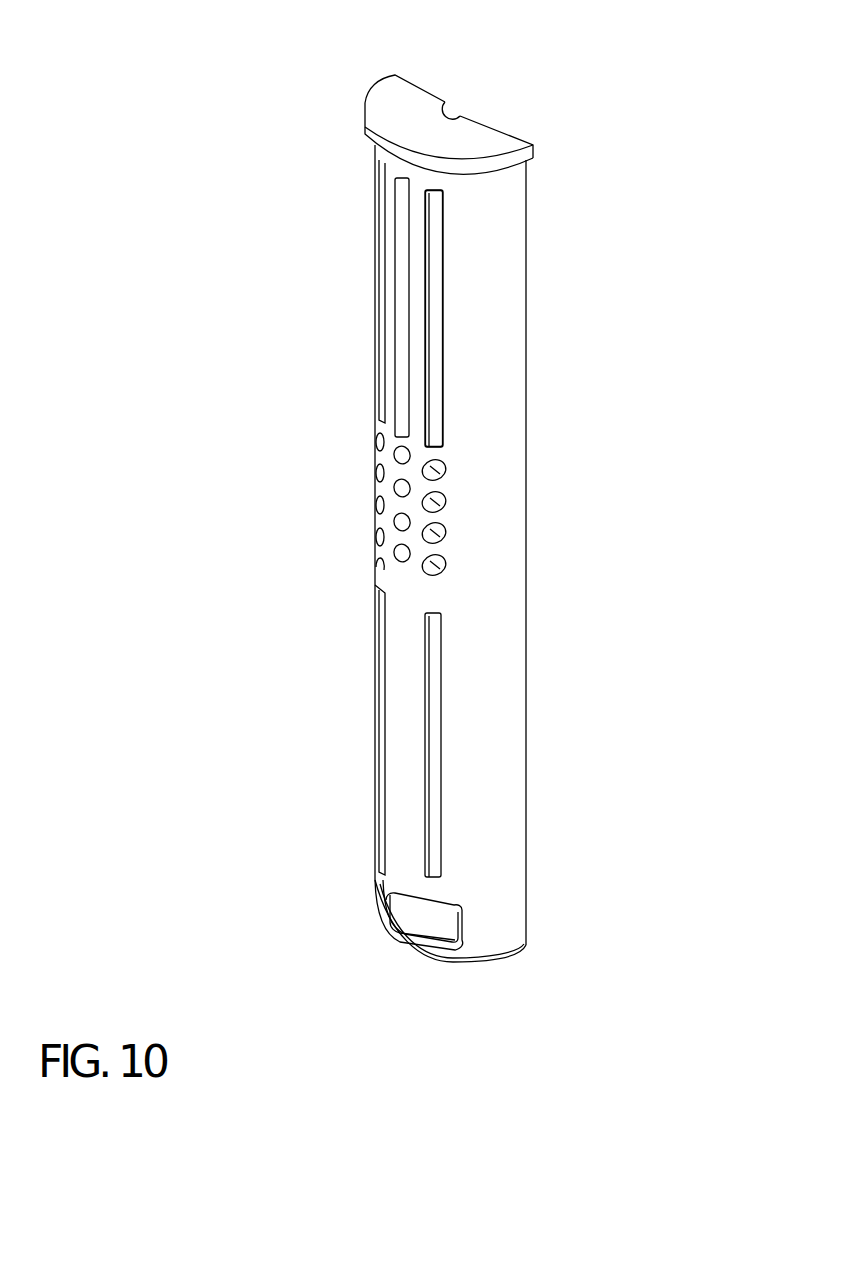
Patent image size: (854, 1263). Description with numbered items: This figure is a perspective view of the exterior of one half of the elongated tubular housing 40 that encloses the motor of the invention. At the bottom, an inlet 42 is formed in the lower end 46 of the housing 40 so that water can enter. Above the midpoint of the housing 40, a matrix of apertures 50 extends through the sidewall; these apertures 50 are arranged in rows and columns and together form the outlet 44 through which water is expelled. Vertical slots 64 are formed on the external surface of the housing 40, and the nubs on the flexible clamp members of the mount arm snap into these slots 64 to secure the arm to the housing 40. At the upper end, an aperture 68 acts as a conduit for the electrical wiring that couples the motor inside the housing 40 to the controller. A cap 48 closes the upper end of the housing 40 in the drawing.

The elongated tubular housing 40 is at (515, 425).
The inlet 42 is at (393, 938).
The outlet 44 is at (457, 503).
The lower end 46 is at (495, 958).
The cap 48 is at (395, 105).
The apertures 50 is at (402, 490).
The vertical slots 64 is at (430, 348).
The aperture 68 is at (460, 110).